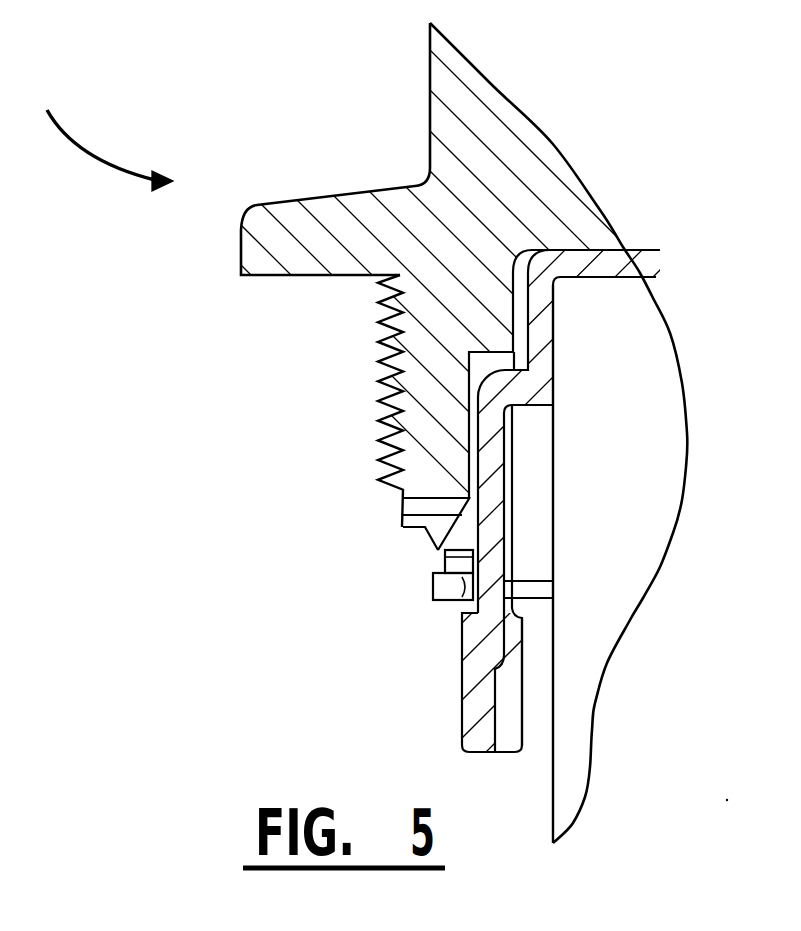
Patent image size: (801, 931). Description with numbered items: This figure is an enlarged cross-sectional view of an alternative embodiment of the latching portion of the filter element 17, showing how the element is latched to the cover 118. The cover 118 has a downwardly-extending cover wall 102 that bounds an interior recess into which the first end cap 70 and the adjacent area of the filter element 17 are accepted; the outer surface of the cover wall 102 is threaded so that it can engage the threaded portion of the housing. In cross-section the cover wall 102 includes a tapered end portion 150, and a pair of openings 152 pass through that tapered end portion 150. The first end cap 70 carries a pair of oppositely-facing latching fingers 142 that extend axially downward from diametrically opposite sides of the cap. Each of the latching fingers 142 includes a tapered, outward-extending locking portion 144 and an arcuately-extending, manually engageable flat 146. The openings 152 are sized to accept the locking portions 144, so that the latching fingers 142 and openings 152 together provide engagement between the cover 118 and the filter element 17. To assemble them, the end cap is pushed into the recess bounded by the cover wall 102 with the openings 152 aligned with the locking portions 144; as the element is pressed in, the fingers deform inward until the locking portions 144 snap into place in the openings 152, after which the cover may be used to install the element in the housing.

The cover 118 is at (335, 220).
The cover wall 102 is at (418, 338).
The first end cap 70 is at (613, 267).
The openings 152 is at (403, 514).
The tapered end portion 150 is at (402, 529).
The locking portions 144 is at (430, 545).
The flats 146 is at (462, 647).
The latching fingers 142 is at (462, 737).
The filter element 17 is at (548, 791).